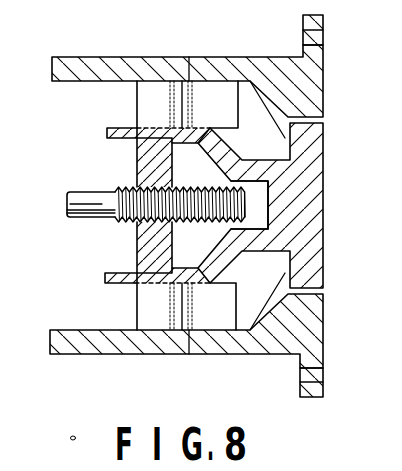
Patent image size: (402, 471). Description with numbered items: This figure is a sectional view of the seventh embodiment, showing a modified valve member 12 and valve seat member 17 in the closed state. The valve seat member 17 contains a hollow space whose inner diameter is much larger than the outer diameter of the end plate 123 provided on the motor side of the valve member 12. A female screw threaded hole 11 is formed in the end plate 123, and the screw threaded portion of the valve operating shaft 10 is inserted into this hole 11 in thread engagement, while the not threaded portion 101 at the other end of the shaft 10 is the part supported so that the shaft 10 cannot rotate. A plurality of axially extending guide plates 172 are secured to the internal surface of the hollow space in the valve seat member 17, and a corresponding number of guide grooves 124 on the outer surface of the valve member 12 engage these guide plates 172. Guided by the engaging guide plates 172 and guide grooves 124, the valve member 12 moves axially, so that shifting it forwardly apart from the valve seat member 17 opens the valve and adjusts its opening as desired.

The guide plates 172 is at (200, 82).
The valve seat member 17 is at (268, 332).
The valve member 12 is at (318, 253).
The guide grooves 124 is at (115, 127).
The end plate 123 is at (137, 165).
The not threaded portion 101 is at (90, 218).
The valve operating shaft 10 is at (118, 221).
The female screw threaded hole 11 is at (160, 222).